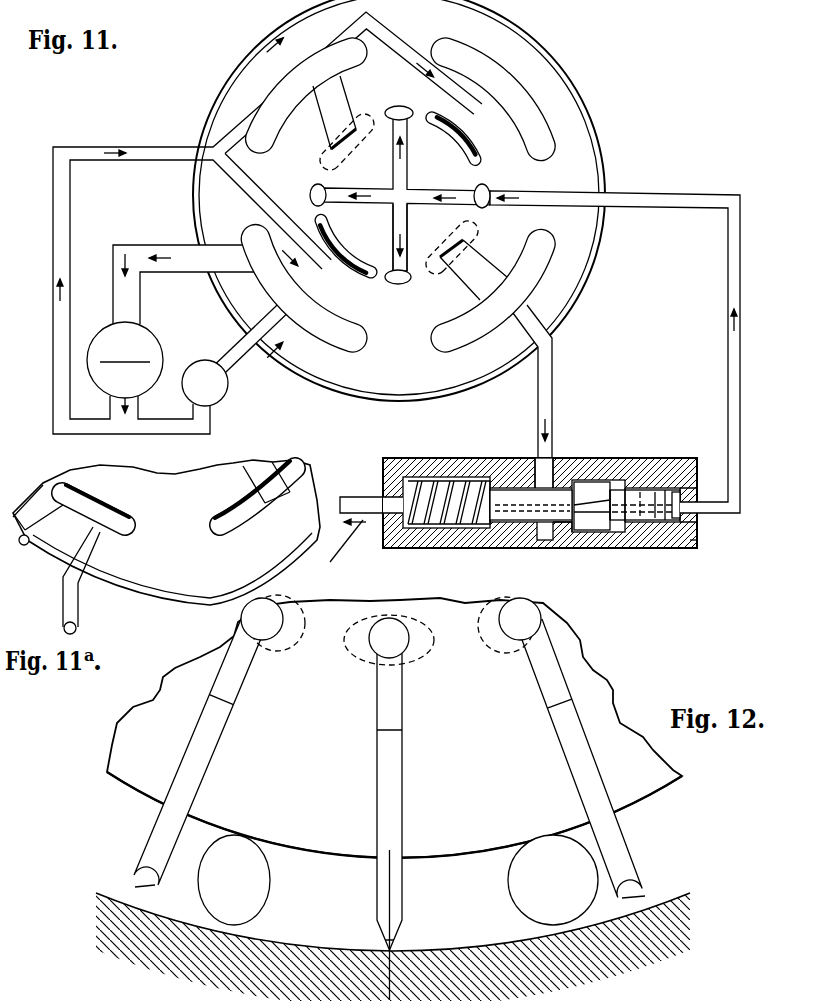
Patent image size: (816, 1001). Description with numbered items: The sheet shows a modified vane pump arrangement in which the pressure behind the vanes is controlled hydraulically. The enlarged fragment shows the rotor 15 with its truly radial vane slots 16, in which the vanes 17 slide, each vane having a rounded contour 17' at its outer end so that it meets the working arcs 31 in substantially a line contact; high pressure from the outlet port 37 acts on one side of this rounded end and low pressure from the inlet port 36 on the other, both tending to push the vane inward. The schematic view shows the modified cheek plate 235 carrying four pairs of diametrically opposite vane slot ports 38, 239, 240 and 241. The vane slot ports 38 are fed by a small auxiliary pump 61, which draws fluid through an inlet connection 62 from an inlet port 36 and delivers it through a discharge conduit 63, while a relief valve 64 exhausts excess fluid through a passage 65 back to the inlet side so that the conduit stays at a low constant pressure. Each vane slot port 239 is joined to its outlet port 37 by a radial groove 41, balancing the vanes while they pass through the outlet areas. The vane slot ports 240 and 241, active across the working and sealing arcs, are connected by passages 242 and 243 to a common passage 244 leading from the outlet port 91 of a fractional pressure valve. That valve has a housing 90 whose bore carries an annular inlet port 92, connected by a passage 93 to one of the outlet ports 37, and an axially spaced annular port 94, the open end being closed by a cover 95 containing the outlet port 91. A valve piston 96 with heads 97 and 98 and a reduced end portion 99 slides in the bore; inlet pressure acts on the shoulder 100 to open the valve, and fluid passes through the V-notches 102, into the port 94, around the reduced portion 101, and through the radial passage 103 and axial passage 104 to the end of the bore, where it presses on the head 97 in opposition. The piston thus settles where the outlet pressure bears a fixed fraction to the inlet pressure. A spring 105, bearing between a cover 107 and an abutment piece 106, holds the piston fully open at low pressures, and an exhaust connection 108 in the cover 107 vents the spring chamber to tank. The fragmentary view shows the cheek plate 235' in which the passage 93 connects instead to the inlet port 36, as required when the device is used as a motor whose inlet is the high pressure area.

In FIG. 12, the rotor 15 is at (320, 833).
In FIG. 12, the vane slots 16 is at (236, 690).
In FIG. 12, the vanes 17 is at (398, 778).
In FIG. 12, the rounded contour 17' is at (385, 910).
In FIG. 12, the working arcs 31 is at (318, 928).
In FIG. 11, the inlet ports 36 is at (510, 90).
In FIG. 11A, the inlet ports 36 is at (118, 512).
In FIG. 12, the inlet ports 36 is at (260, 893).
In FIG. 11, the outlet ports 37 is at (340, 70).
In FIG. 11A, the outlet ports 37 is at (250, 505).
In FIG. 12, the outlet ports 37 is at (505, 880).
In FIG. 11, the vane slot ports 38 is at (462, 150).
In FIG. 12, the vane slot ports 38 is at (300, 640).
In FIG. 11, the radial groove 41 is at (318, 128).
In FIG. 11A, the radial groove 41 is at (235, 470).
In FIG. 11, the auxiliary pump 61 is at (100, 335).
In FIG. 11, the inlet connection 62 is at (173, 245).
In FIG. 11, the discharge conduit 63 is at (172, 160).
In FIG. 11, the relief valve 64 is at (229, 389).
In FIG. 11, the passage 65 is at (225, 352).
In FIG. 11A, the passage 65 is at (40, 550).
In FIG. 11, the valve housing 90 is at (515, 458).
In FIG. 11, the outlet port 91 is at (700, 520).
In FIG. 11, the inlet port 92 is at (555, 540).
In FIG. 11, the passage 93 is at (553, 400).
In FIG. 11A, the passage 93 is at (78, 612).
In FIG. 11, the annular port 94 is at (592, 480).
In FIG. 11, the cover 95 is at (695, 545).
In FIG. 11, the valve piston 96 is at (641, 530).
In FIG. 11, the head 97 is at (672, 530).
In FIG. 11, the head 98 is at (606, 530).
In FIG. 11, the reduced end portion 99 is at (520, 522).
In FIG. 11, the shoulder 100 is at (560, 458).
In FIG. 11, the reduced portion 101 is at (625, 470).
In FIG. 11, the V-notches 102 is at (580, 535).
In FIG. 11, the radial passage 103 is at (665, 490).
In FIG. 11, the axial passage 104 is at (692, 465).
In FIG. 11, the spring 105 is at (430, 530).
In FIG. 11, the abutment piece 106 is at (480, 528).
In FIG. 11, the cover 107 is at (398, 460).
In FIG. 11, the exhaust connection 108 is at (365, 497).
In FIG. 11, the cheek plate 235 is at (418, 200).
In FIG. 11A, the modified cheek plate 235' is at (166, 542).
In FIG. 11, the vane slot ports 239 is at (341, 146).
In FIG. 12, the vane slot ports 239 is at (490, 630).
In FIG. 11, the vane slot ports 240 is at (408, 97).
In FIG. 12, the vane slot ports 240 is at (440, 655).
In FIG. 11, the vane slot ports 241 is at (326, 188).
In FIG. 11, the passage 242 is at (404, 238).
In FIG. 11, the passage 243 is at (405, 193).
In FIG. 11, the passage 244 is at (725, 284).